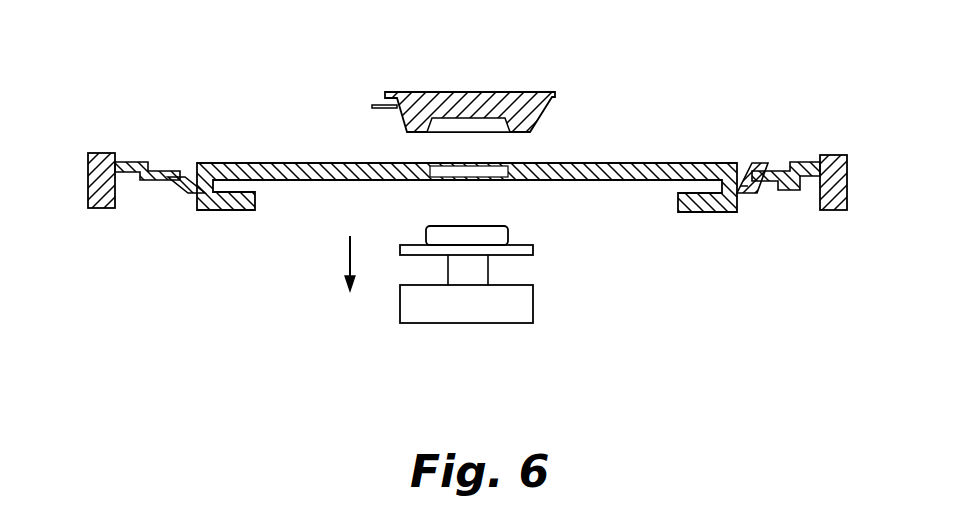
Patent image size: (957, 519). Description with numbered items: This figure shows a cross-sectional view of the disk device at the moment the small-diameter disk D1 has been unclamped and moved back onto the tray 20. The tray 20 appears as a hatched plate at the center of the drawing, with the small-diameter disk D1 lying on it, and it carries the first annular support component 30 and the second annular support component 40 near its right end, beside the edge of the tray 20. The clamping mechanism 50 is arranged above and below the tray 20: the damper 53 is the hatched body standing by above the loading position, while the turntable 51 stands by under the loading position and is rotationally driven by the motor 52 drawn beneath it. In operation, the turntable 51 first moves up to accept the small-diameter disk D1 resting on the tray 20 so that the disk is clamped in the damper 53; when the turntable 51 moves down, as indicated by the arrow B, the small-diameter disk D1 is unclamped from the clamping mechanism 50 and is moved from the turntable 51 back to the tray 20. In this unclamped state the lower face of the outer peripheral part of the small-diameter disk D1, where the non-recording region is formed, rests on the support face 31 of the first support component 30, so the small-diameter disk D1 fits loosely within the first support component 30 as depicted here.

The tray 20 is at (838, 147).
The first annular support component 30 is at (748, 157).
The support face 31 is at (740, 193).
The second annular support component 40 is at (808, 147).
The clamping mechanism 50 is at (514, 72).
The turntable 51 is at (535, 247).
The motor 52 is at (535, 305).
The damper 53 is at (428, 92).
The small-diameter disk D1 is at (663, 163).
The arrow B is at (338, 263).